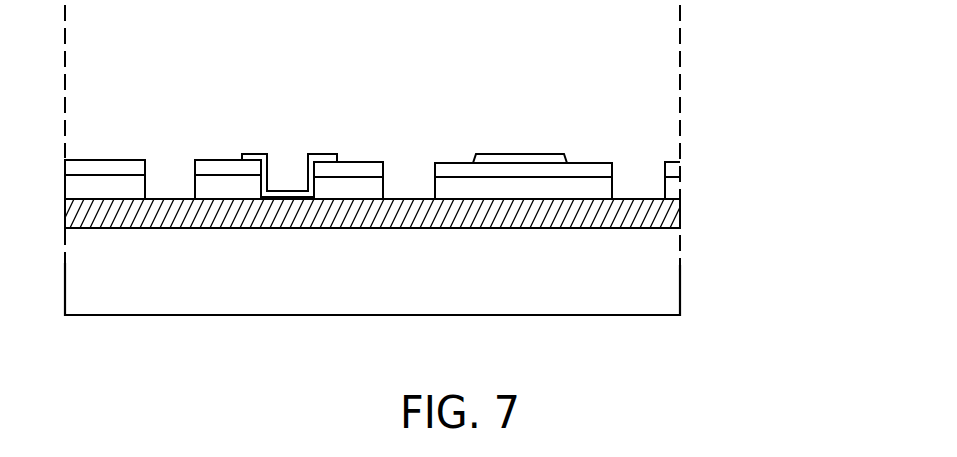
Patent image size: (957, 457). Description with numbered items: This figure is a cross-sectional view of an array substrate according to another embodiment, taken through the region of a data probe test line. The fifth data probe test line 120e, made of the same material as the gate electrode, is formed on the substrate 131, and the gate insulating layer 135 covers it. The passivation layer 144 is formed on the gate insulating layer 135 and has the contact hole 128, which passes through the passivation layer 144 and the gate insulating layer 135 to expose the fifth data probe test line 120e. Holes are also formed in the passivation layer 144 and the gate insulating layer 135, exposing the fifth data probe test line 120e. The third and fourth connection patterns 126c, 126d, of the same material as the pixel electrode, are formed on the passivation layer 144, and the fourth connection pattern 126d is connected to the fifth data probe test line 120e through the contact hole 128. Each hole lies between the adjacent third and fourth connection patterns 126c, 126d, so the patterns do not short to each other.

The substrate 131 is at (655, 283).
The fifth data probe test line 120e is at (678, 208).
The passivation layer 144 is at (117, 168).
The fourth connection pattern 126d is at (252, 153).
The contact hole 128 is at (301, 137).
The third connection pattern 126c is at (538, 153).
The gate insulating layer 135 is at (672, 188).